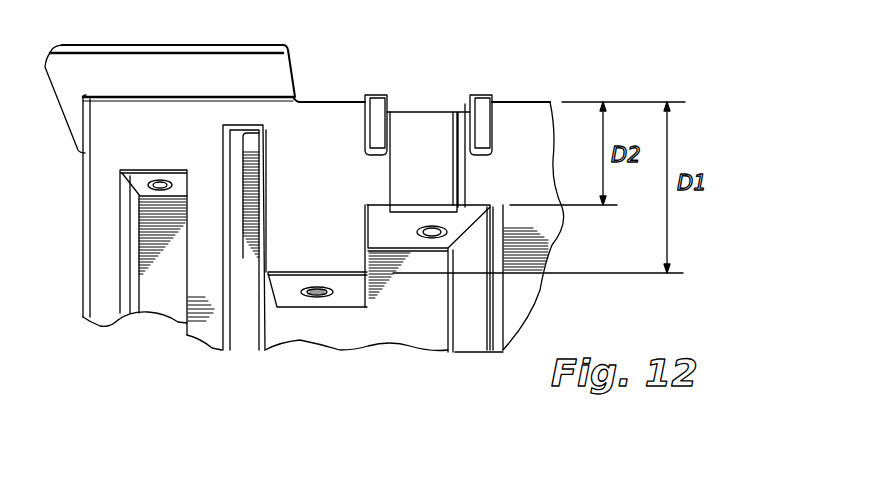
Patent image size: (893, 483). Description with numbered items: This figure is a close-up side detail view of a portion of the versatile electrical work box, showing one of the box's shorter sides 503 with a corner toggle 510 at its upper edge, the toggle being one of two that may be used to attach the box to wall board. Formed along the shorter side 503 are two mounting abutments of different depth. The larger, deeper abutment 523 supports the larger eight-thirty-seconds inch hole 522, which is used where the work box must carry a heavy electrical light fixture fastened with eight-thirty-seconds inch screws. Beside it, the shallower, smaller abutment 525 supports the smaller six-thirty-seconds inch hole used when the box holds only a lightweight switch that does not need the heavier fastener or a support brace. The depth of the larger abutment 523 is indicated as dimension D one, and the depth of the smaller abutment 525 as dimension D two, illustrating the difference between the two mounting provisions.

The shorter side 503 is at (518, 135).
The corner toggle 510 is at (140, 48).
The smaller abutment 525 is at (440, 185).
The larger abutment 523 is at (328, 243).
The 8/32 inch hole 522 is at (320, 298).